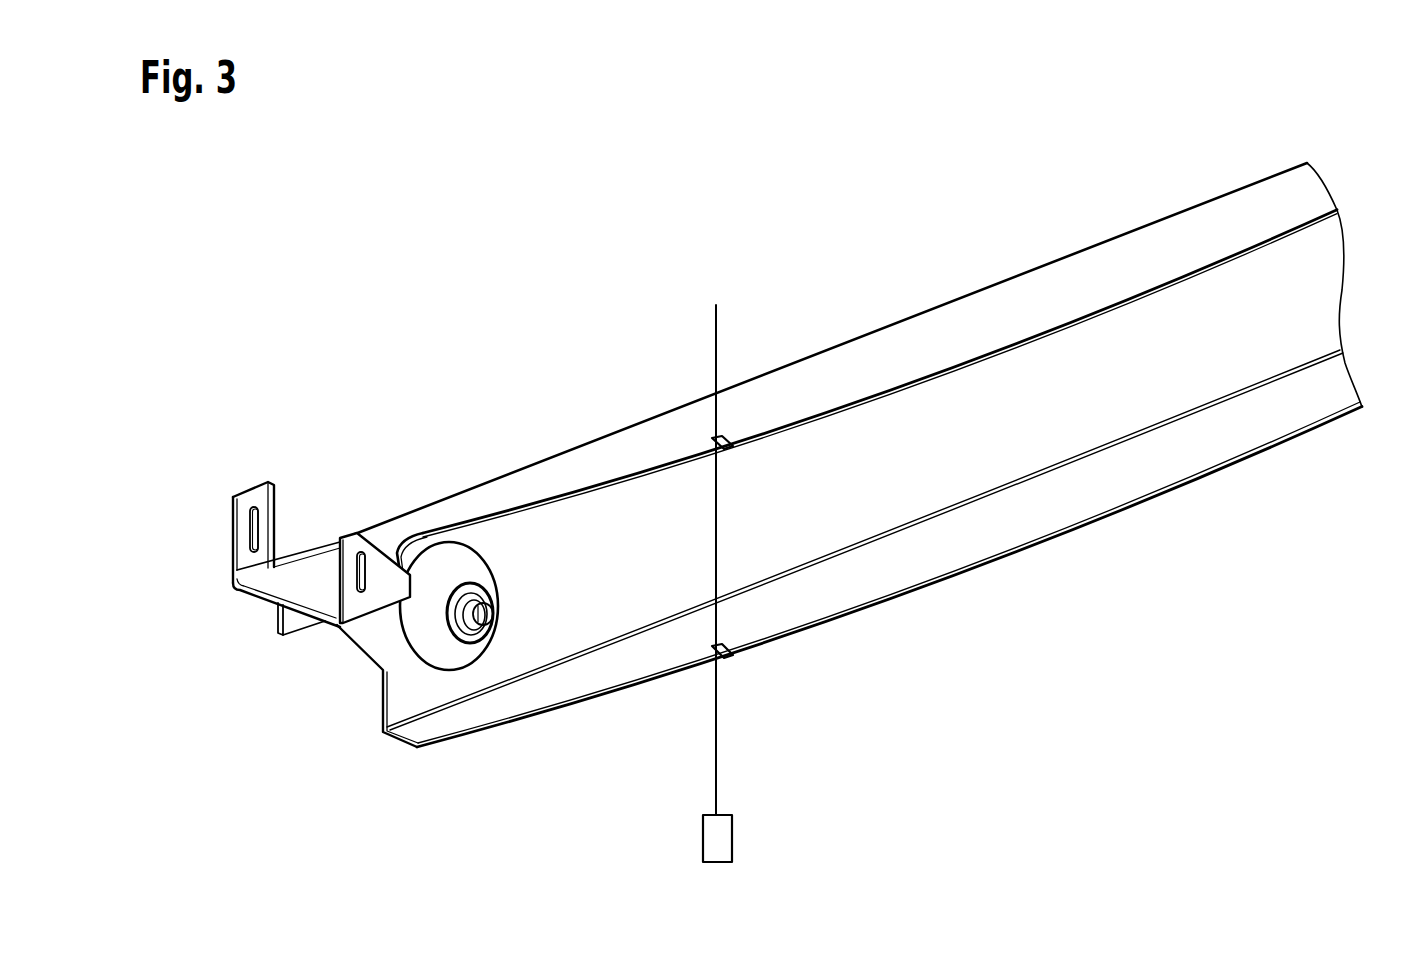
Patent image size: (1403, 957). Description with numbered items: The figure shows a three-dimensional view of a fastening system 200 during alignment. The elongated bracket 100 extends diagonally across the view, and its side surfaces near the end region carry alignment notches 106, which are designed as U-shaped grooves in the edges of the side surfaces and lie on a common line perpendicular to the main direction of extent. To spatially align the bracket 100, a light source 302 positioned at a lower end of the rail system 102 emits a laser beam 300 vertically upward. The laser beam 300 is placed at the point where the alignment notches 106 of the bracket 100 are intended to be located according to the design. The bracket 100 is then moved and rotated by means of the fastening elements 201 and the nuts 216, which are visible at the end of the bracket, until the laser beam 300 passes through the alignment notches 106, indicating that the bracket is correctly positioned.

The bracket 100 is at (987, 328).
The rail system 102 is at (462, 314).
The alignment notch 106 is at (727, 440).
The fastening system 200 is at (382, 635).
The fastening element 201 is at (438, 643).
The nut 216 is at (455, 642).
The laser beam 300 is at (716, 343).
The light source 302 is at (703, 837).